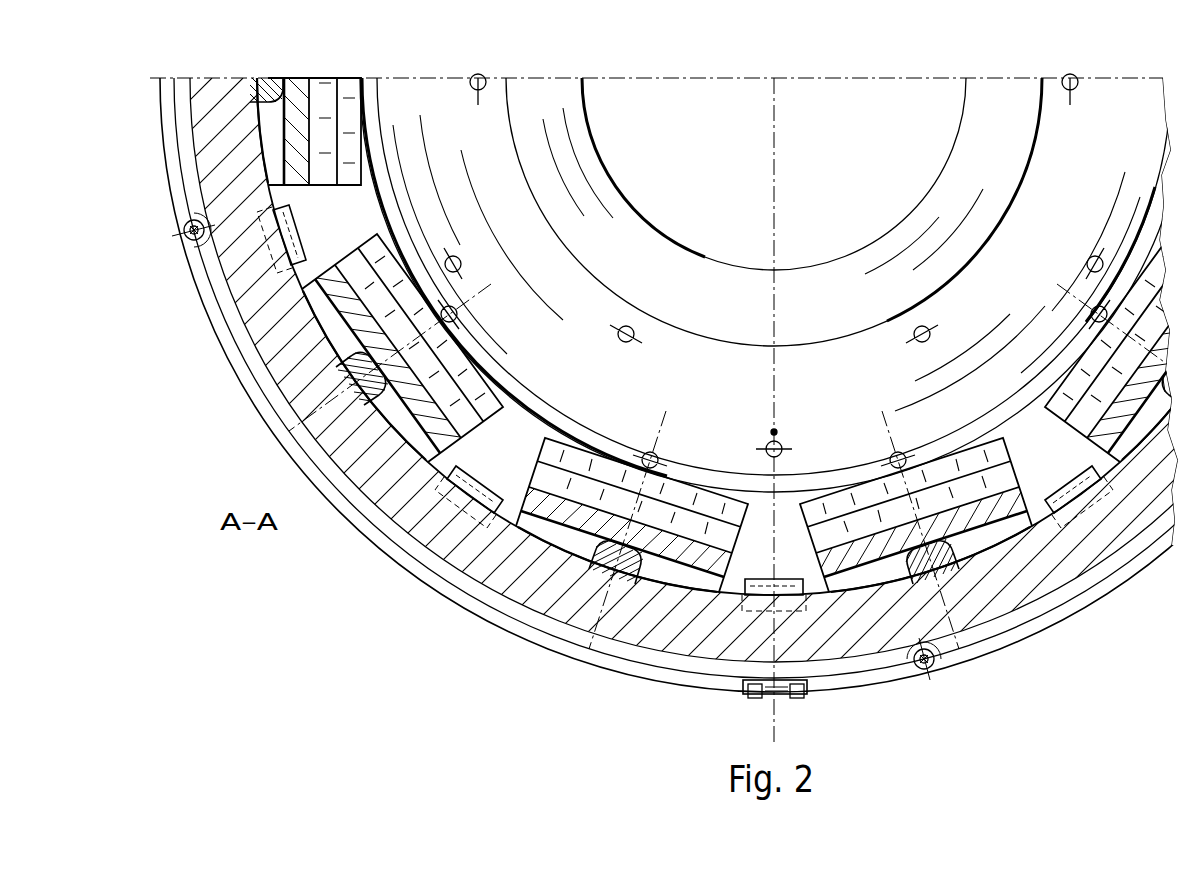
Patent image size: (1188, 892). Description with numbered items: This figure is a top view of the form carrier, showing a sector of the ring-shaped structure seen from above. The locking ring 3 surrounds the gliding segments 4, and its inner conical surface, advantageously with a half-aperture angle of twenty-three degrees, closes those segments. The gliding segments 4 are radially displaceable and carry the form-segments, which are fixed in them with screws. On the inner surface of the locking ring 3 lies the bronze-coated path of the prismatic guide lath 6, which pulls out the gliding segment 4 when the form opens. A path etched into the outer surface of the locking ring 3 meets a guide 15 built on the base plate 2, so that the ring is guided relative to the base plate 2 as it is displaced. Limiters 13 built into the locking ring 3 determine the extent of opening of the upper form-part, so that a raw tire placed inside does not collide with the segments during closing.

The base plate 2 is at (503, 530).
The locking ring 3 is at (548, 586).
The gliding segment 4 is at (990, 548).
The prismatic guide lath 6 is at (945, 568).
The limiter 13 is at (452, 492).
The guide 15 is at (783, 695).